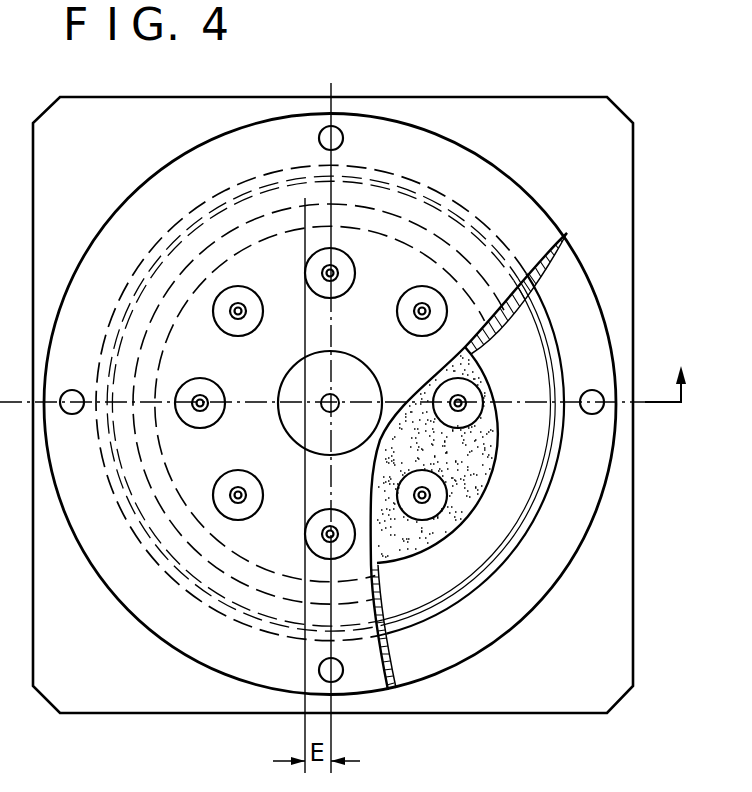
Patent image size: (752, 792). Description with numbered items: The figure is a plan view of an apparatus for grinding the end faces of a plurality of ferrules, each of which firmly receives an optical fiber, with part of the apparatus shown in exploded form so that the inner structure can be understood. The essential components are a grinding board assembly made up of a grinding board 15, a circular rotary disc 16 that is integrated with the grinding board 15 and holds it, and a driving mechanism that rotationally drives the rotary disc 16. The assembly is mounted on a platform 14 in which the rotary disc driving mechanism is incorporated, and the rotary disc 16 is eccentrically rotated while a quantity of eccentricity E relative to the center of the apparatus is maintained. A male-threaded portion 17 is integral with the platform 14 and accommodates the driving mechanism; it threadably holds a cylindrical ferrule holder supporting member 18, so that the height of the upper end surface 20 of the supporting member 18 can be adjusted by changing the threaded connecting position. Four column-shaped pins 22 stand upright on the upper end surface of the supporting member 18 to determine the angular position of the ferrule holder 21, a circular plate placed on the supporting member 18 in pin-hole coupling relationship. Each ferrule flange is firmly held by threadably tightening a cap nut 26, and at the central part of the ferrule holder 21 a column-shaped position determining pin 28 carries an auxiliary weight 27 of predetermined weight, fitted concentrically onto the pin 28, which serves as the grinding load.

The platform 14 is at (588, 626).
The grinding board 15 is at (470, 362).
The circular rotary disc 16 is at (487, 425).
The male-threaded portion 17 is at (535, 521).
The ferrule holder supporting member 18 is at (578, 568).
The upper end surface 20 is at (585, 443).
The ferrule holder 21 is at (533, 262).
The column-shaped pins 22 is at (339, 133).
The cap nut 26 is at (198, 418).
The auxiliary weight 27 is at (358, 375).
The column-shaped position determining pin 28 is at (338, 398).